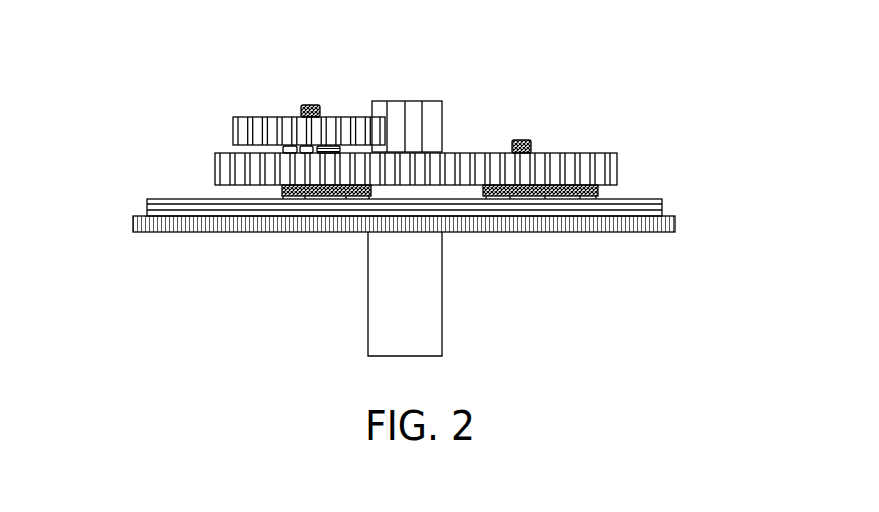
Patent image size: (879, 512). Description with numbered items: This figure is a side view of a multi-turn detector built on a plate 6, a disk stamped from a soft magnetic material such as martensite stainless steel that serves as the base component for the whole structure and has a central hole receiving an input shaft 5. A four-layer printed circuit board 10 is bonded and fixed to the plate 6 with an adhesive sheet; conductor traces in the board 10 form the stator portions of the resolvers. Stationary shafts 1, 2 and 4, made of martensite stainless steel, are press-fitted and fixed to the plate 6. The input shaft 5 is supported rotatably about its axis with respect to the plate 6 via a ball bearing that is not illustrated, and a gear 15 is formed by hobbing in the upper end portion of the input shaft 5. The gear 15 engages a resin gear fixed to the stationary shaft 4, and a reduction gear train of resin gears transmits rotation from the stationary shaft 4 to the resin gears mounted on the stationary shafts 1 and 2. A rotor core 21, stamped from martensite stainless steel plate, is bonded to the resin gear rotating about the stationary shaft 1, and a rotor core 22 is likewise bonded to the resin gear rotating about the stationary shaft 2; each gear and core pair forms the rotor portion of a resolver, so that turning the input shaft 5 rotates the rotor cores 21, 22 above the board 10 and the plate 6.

The stationary shaft 1 is at (327, 116).
The stationary shaft 2 is at (522, 140).
The stationary shaft 4 is at (302, 106).
The input shaft 5 is at (423, 305).
The plate 6 is at (675, 222).
The four-layer printed circuit board 10 is at (662, 199).
The gear 15 is at (430, 119).
The rotor core 21 is at (282, 190).
The rotor core 22 is at (600, 195).